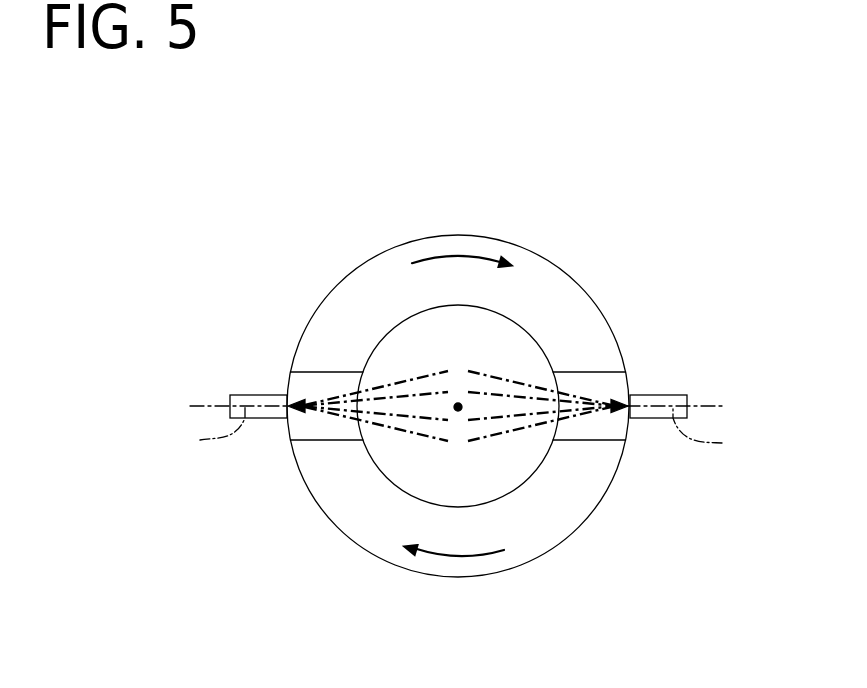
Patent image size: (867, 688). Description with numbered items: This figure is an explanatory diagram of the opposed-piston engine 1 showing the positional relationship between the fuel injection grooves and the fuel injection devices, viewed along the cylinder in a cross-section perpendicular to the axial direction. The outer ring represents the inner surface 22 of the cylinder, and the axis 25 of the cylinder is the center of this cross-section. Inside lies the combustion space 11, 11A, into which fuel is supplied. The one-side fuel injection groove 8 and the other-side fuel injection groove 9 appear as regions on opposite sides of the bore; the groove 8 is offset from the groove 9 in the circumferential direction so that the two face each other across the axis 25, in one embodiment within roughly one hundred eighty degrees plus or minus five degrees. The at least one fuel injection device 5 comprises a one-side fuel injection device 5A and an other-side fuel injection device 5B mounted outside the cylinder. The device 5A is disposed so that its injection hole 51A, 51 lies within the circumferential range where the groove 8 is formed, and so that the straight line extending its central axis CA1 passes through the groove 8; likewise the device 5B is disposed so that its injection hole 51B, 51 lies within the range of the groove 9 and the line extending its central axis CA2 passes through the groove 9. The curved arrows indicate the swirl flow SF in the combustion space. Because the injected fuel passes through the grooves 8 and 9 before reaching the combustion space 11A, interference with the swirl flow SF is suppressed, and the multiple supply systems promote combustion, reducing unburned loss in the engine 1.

The opposed-piston engine 1 is at (267, 116).
The inner surface 22 is at (590, 296).
The combustion space 11 is at (503, 350).
The combustion space 11A is at (458, 406).
The one-side fuel injection groove 8 is at (332, 372).
The other-side fuel injection groove 9 is at (593, 372).
The fuel injection device 5 is at (469, 364).
The one-side fuel injection device 5A is at (262, 395).
The other-side fuel injection device 5B is at (660, 395).
The central axis CA1 is at (195, 430).
The central axis CA2 is at (724, 431).
The injection hole 51 is at (463, 462).
The injection hole 51A is at (299, 412).
The injection hole 51B is at (619, 411).
The axis 25 is at (458, 410).
The swirl flow SF is at (430, 235).